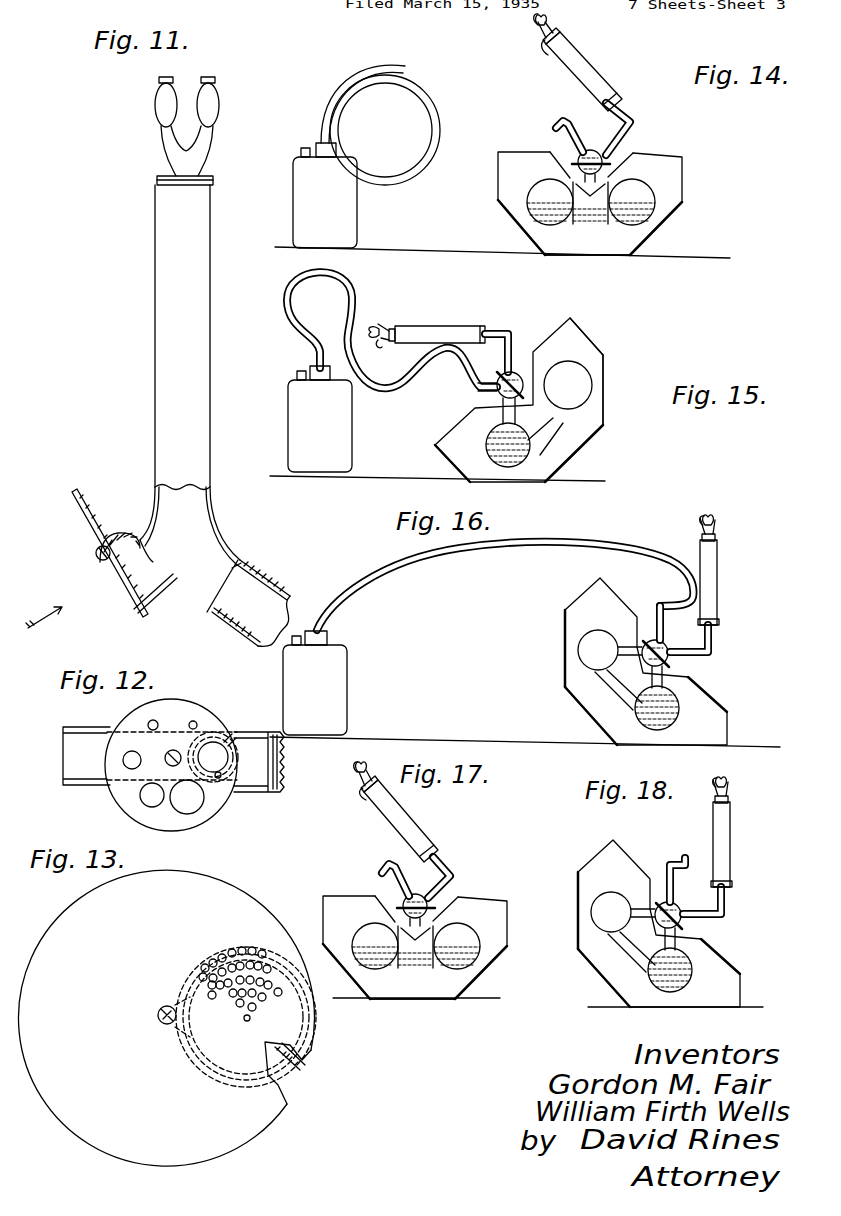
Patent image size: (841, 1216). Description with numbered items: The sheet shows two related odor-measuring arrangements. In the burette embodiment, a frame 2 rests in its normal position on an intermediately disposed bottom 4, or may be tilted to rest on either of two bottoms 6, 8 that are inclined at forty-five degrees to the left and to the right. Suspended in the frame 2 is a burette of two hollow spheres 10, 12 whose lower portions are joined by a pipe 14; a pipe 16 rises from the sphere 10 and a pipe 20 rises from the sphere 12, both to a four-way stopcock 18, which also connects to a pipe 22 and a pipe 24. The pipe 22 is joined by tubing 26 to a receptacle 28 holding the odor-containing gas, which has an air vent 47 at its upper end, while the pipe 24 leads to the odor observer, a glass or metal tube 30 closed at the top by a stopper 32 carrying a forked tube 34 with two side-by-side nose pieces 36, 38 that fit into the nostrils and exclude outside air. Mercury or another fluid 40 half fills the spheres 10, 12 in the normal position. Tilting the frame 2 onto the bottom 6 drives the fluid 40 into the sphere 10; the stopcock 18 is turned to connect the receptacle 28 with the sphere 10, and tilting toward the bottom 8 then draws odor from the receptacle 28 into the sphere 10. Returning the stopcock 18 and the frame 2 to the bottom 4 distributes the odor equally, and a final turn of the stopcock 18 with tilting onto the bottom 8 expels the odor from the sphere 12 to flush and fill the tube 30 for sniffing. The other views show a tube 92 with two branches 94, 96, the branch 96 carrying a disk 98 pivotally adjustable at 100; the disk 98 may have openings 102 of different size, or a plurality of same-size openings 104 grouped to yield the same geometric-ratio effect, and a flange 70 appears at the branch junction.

In FIG. 14, the frame 2 is at (682, 204).
In FIG. 15, the frame 2 is at (604, 426).
In FIG. 16, the frame 2 is at (730, 713).
In FIG. 17, the frame 2 is at (415, 967).
In FIG. 18, the frame 2 is at (655, 916).
In FIG. 14, the bottom 4 is at (612, 257).
In FIG. 15, the bottom 4 is at (576, 455).
In FIG. 16, the bottom 4 is at (580, 710).
In FIG. 17, the bottom 4 is at (412, 1014).
In FIG. 18, the bottom 4 is at (600, 978).
In FIG. 14, the bottom 6 is at (520, 232).
In FIG. 15, the bottom 6 is at (508, 482).
In FIG. 16, the bottom 6 is at (565, 659).
In FIG. 17, the bottom 6 is at (346, 971).
In FIG. 18, the bottom 6 is at (560, 910).
In FIG. 14, the bottom 8 is at (660, 228).
In FIG. 15, the bottom 8 is at (604, 400).
In FIG. 16, the bottom 8 is at (668, 748).
In FIG. 17, the bottom 8 is at (481, 972).
In FIG. 18, the bottom 8 is at (705, 984).
In FIG. 14, the hollow sphere 10 is at (527, 193).
In FIG. 15, the hollow sphere 10 is at (522, 463).
In FIG. 16, the hollow sphere 10 is at (585, 648).
In FIG. 17, the hollow sphere 10 is at (344, 938).
In FIG. 18, the hollow sphere 10 is at (596, 934).
In FIG. 11, the hollow sphere 12 is at (45, 622).
In FIG. 14, the hollow sphere 12 is at (658, 192).
In FIG. 15, the hollow sphere 12 is at (588, 384).
In FIG. 16, the hollow sphere 12 is at (705, 731).
In FIG. 17, the hollow sphere 12 is at (483, 948).
In FIG. 18, the hollow sphere 12 is at (704, 973).
In FIG. 14, the pipe 14 is at (580, 222).
In FIG. 15, the pipe 14 is at (585, 432).
In FIG. 16, the pipe 14 is at (605, 712).
In FIG. 17, the pipe 14 is at (391, 981).
In FIG. 18, the pipe 14 is at (592, 963).
In FIG. 14, the pipe 16 is at (565, 174).
In FIG. 15, the pipe 16 is at (504, 425).
In FIG. 16, the pipe 16 is at (614, 636).
In FIG. 17, the pipe 16 is at (367, 909).
In FIG. 18, the pipe 16 is at (617, 901).
In FIG. 14, the four-way stopcock 18 is at (604, 157).
In FIG. 15, the four-way stopcock 18 is at (497, 394).
In FIG. 16, the four-way stopcock 18 is at (675, 662).
In FIG. 17, the four-way stopcock 18 is at (435, 901).
In FIG. 18, the four-way stopcock 18 is at (693, 919).
In FIG. 14, the pipe 20 is at (612, 178).
In FIG. 15, the pipe 20 is at (542, 376).
In FIG. 16, the pipe 20 is at (670, 690).
In FIG. 17, the pipe 20 is at (458, 910).
In FIG. 18, the pipe 20 is at (688, 946).
In FIG. 14, the pipe 22 is at (557, 131).
In FIG. 15, the pipe 22 is at (478, 388).
In FIG. 16, the pipe 22 is at (657, 605).
In FIG. 17, the pipe 22 is at (380, 875).
In FIG. 18, the pipe 22 is at (662, 874).
In FIG. 14, the pipe 24 is at (628, 122).
In FIG. 15, the pipe 24 is at (512, 333).
In FIG. 16, the pipe 24 is at (712, 652).
In FIG. 17, the pipe 24 is at (452, 872).
In FIG. 18, the pipe 24 is at (725, 900).
In FIG. 14, the tubing 26 is at (438, 132).
In FIG. 15, the tubing 26 is at (288, 328).
In FIG. 16, the tubing 26 is at (440, 562).
In FIG. 14, the receptacle 28 is at (357, 240).
In FIG. 15, the receptacle 28 is at (288, 453).
In FIG. 16, the receptacle 28 is at (335, 690).
In FIG. 14, the tube 30 is at (590, 78).
In FIG. 15, the tube 30 is at (448, 326).
In FIG. 16, the tube 30 is at (718, 576).
In FIG. 17, the tube 30 is at (414, 832).
In FIG. 18, the tube 30 is at (734, 844).
In FIG. 11, the stopper 32 is at (213, 181).
In FIG. 14, the stopper 32 is at (558, 37).
In FIG. 15, the stopper 32 is at (392, 329).
In FIG. 16, the stopper 32 is at (716, 538).
In FIG. 17, the stopper 32 is at (366, 796).
In FIG. 18, the stopper 32 is at (736, 813).
In FIG. 11, the forked tube 34 is at (166, 156).
In FIG. 14, the forked tube 34 is at (549, 57).
In FIG. 15, the forked tube 34 is at (395, 326).
In FIG. 16, the forked tube 34 is at (701, 533).
In FIG. 17, the forked tube 34 is at (360, 788).
In FIG. 18, the forked tube 34 is at (698, 804).
In FIG. 11, the nose piece 36 is at (217, 93).
In FIG. 14, the nose piece 36 is at (532, 26).
In FIG. 15, the nose piece 36 is at (375, 323).
In FIG. 16, the nose piece 36 is at (716, 520).
In FIG. 17, the nose piece 36 is at (366, 761).
In FIG. 18, the nose piece 36 is at (741, 781).
In FIG. 11, the nose piece 38 is at (152, 106).
In FIG. 14, the nose piece 38 is at (535, 35).
In FIG. 15, the nose piece 38 is at (381, 344).
In FIG. 16, the nose piece 38 is at (702, 521).
In FIG. 17, the nose piece 38 is at (352, 770).
In FIG. 18, the nose piece 38 is at (734, 769).
In FIG. 14, the fluid 40 is at (636, 222).
In FIG. 15, the fluid 40 is at (494, 451).
In FIG. 16, the fluid 40 is at (640, 750).
In FIG. 17, the fluid 40 is at (424, 988).
In FIG. 18, the fluid 40 is at (709, 966).
In FIG. 14, the air vent 47 is at (300, 152).
In FIG. 15, the air vent 47 is at (297, 375).
In FIG. 16, the air vent 47 is at (292, 640).
In FIG. 11, the flange ring 70 is at (218, 606).
In FIG. 11, the tube 92 is at (168, 314).
In FIG. 12, the tube 92 is at (66, 766).
In FIG. 11, the branch 94 is at (226, 566).
In FIG. 12, the branch 94 is at (250, 790).
In FIG. 11, the branch 96 is at (135, 542).
In FIG. 12, the branch 96 is at (228, 740).
In FIG. 13, the branch 96 is at (290, 1062).
In FIG. 11, the disk 98 is at (73, 494).
In FIG. 12, the disk 98 is at (183, 828).
In FIG. 13, the disk 98 is at (250, 1135).
In FIG. 11, the pivot 100 is at (98, 560).
In FIG. 12, the pivot 100 is at (166, 763).
In FIG. 13, the pivot 100 is at (156, 1015).
In FIG. 11, the openings 102 is at (90, 523).
In FIG. 12, the openings 102 is at (193, 721).
In FIG. 13, the openings 104 is at (278, 988).